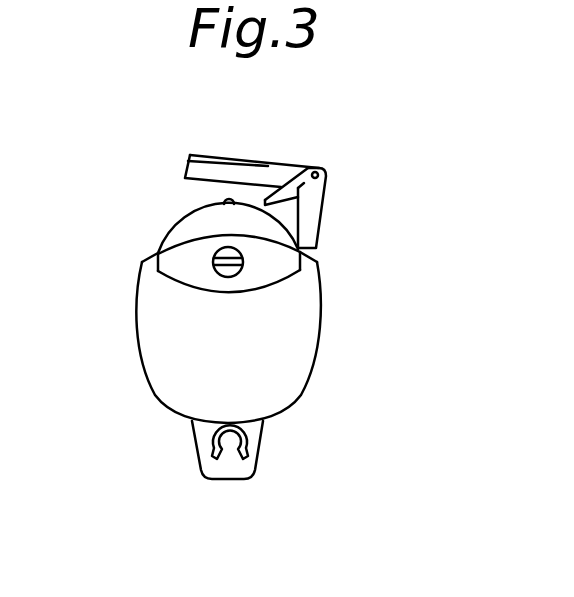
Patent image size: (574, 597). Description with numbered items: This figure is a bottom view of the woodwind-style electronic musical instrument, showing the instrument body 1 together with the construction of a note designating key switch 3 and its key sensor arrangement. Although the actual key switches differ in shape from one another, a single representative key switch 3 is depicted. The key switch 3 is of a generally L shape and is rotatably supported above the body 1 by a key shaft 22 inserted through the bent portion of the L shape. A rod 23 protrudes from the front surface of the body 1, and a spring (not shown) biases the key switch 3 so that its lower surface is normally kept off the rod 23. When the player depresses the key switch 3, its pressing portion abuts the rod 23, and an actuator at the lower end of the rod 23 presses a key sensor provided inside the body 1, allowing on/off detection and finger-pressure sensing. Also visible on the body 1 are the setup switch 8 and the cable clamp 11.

The instrument body 1 is at (123, 355).
The key switch 3 is at (208, 158).
The key shaft 22 is at (318, 169).
The key rod 23 is at (223, 202).
The setup switch 8 is at (262, 445).
The cable clamp 11 is at (210, 439).